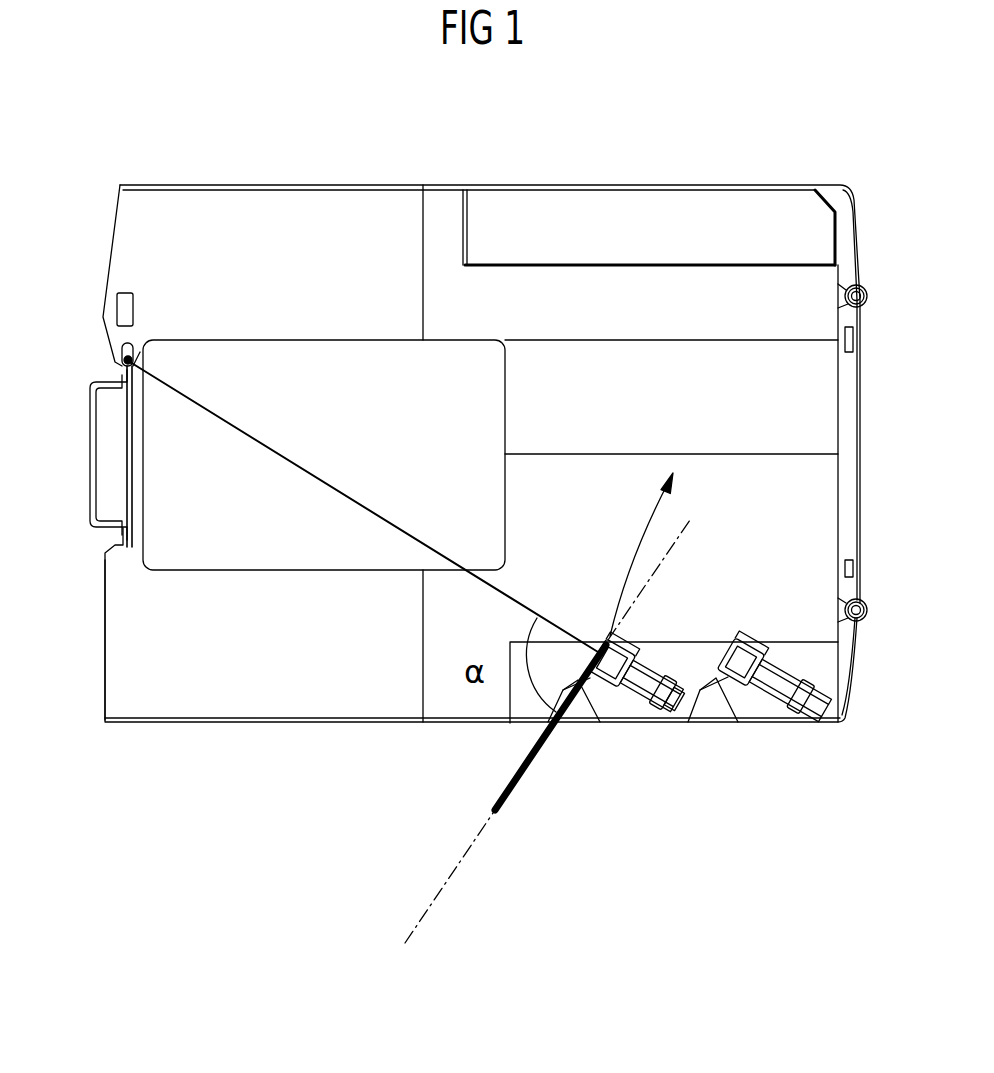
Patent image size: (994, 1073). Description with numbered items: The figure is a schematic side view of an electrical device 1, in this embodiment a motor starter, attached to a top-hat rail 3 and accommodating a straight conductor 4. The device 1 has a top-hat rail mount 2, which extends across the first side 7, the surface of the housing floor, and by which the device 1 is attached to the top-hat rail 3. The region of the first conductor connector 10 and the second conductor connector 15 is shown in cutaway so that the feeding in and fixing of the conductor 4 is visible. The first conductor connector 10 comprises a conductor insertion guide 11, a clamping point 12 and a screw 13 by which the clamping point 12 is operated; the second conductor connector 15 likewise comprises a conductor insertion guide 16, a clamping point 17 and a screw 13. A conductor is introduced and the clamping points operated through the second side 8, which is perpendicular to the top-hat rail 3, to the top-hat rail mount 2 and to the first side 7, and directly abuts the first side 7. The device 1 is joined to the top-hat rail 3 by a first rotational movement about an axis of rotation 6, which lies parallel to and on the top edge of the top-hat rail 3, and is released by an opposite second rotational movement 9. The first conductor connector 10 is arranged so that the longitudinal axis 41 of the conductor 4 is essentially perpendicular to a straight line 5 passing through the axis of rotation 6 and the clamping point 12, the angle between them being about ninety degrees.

The device 1 is at (406, 185).
The top-hat rail mount 2 is at (125, 433).
The top-hat rail 3 is at (92, 490).
The straight conductor 4 is at (510, 771).
The straight line 5 is at (332, 486).
The axis of rotation 6 is at (122, 359).
The first side 7 is at (96, 632).
The second side 8 is at (248, 731).
The second rotational movement 9 is at (666, 510).
The first conductor connector 10 is at (585, 728).
The conductor insertion guide 11 is at (573, 713).
The clamping point 12 is at (608, 710).
The screw 13 is at (637, 712).
The second conductor connector 15 is at (708, 722).
The conductor insertion guide 16 is at (697, 715).
The clamping point 17 is at (745, 710).
The longitudinal axis 41 is at (420, 924).